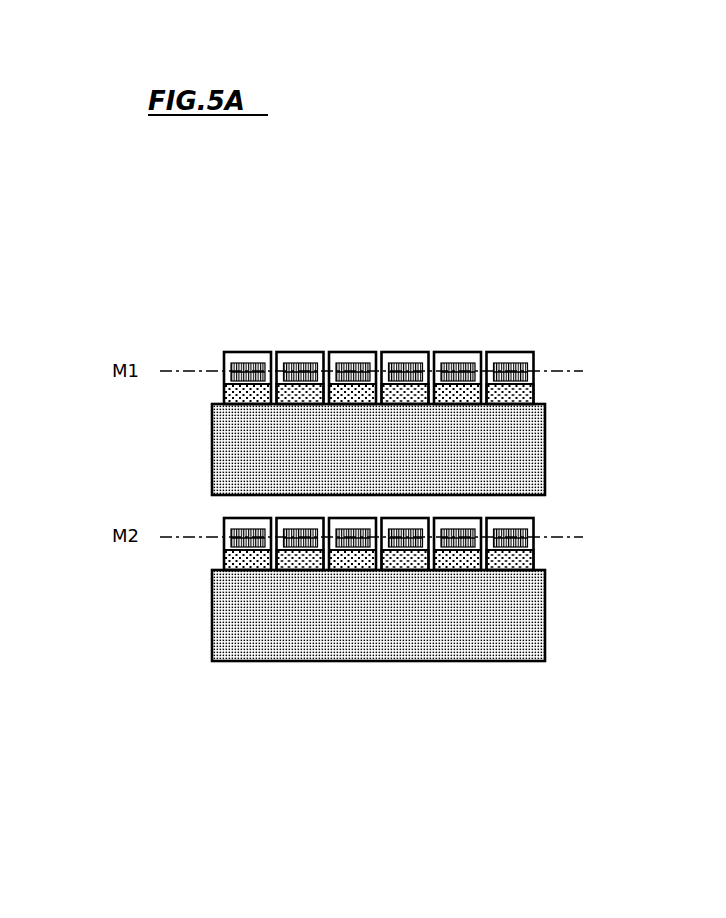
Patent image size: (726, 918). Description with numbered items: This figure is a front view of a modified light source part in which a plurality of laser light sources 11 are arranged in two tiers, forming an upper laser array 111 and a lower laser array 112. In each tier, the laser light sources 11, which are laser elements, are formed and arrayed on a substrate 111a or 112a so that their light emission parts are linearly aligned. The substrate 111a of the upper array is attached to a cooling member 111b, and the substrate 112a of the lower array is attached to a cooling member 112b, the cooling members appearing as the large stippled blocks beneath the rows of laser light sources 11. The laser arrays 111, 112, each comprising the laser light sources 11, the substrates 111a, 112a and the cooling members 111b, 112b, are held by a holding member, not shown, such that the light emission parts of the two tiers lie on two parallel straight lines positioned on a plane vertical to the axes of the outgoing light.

The laser light source 11 is at (302, 362).
The laser array 111 is at (484, 320).
The substrate 111a is at (238, 408).
The cooling member 111b is at (535, 456).
The laser array 112 is at (525, 683).
The substrate 112a is at (238, 574).
The cooling member 112b is at (535, 620).